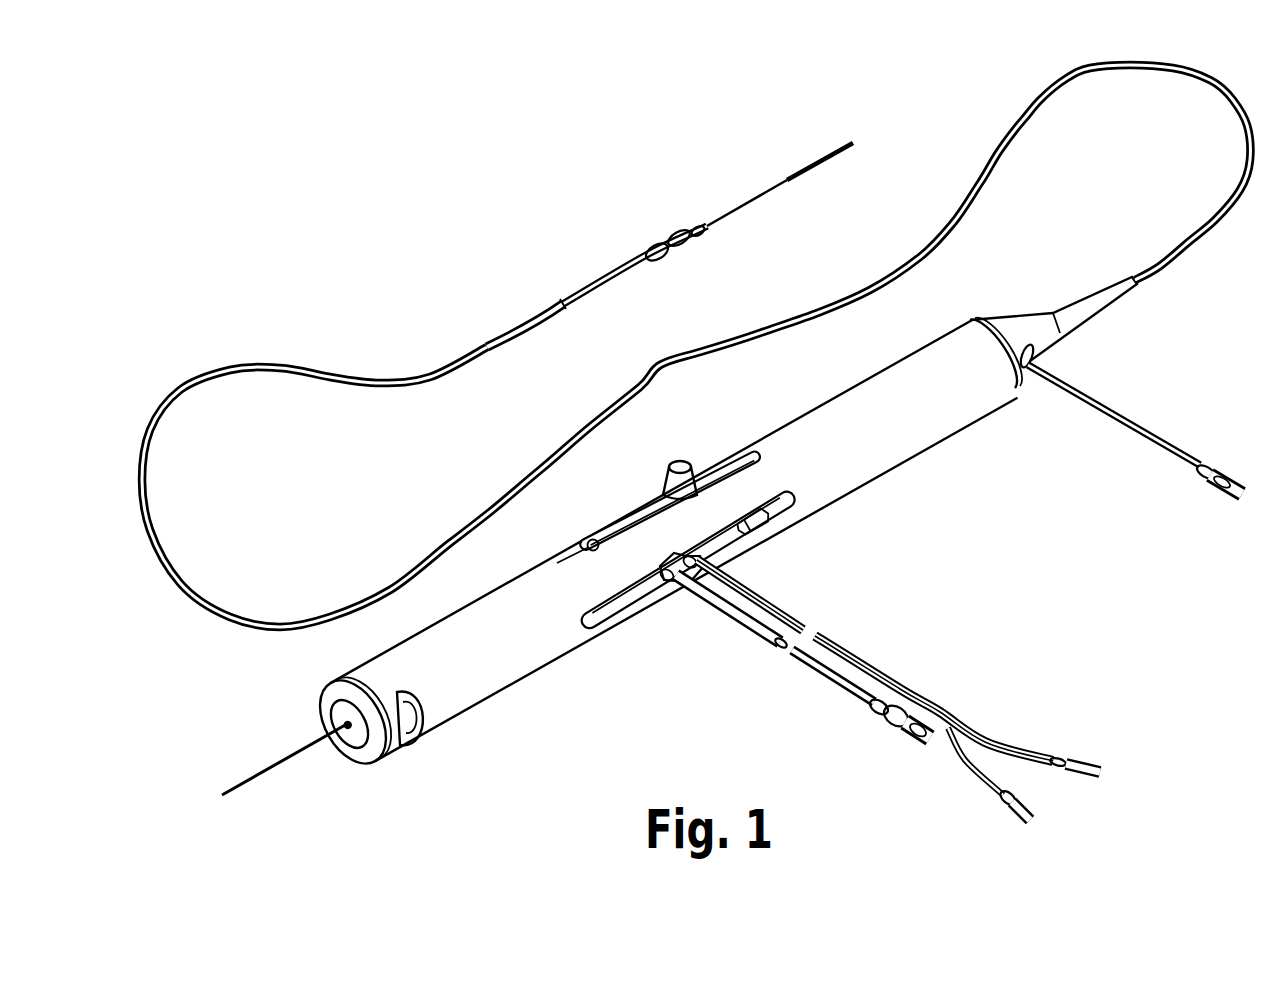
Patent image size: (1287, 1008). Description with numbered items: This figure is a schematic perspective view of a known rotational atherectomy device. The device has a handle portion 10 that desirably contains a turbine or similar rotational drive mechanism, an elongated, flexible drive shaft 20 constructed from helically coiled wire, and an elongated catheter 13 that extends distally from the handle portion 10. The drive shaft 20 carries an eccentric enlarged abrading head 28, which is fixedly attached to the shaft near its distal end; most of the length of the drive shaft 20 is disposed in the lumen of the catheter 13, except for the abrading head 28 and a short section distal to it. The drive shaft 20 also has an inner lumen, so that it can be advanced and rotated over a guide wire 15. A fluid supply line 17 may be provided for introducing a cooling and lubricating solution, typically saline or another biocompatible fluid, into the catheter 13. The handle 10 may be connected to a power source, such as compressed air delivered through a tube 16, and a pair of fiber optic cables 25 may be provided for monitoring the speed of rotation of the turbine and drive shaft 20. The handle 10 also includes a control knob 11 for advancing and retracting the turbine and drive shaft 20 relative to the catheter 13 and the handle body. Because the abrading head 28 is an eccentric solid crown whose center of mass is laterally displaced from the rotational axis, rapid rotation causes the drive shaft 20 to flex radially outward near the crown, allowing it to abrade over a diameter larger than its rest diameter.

The handle portion 10 is at (848, 412).
The control knob 11 is at (679, 462).
The catheter 13 is at (1022, 118).
The guide wire 15 is at (759, 196).
The tube 16 is at (762, 634).
The fluid supply line 17 is at (1120, 415).
The drive shaft 20 is at (582, 257).
The fiber optic cables 25 is at (781, 608).
The abrading head 28 is at (648, 240).